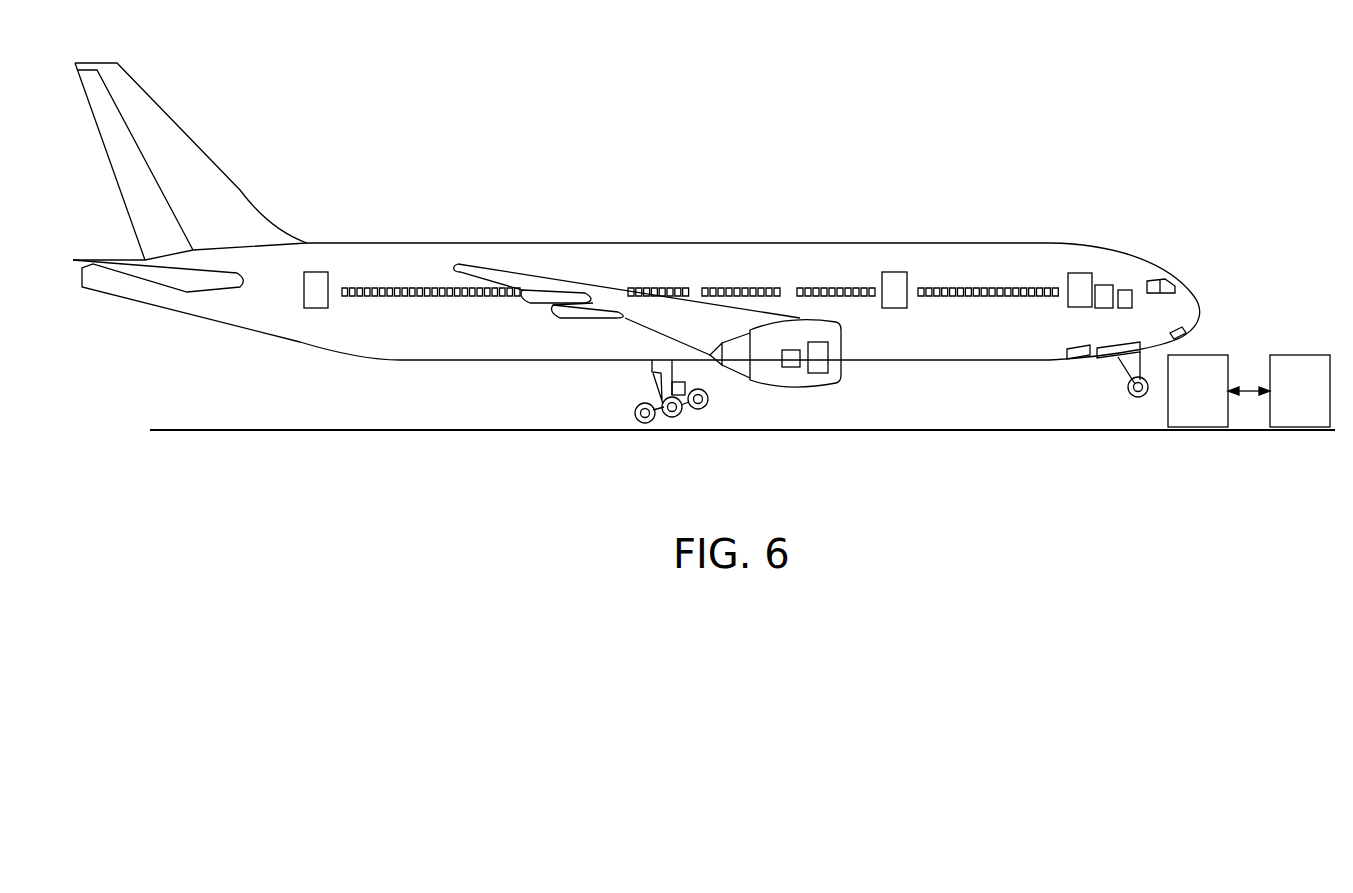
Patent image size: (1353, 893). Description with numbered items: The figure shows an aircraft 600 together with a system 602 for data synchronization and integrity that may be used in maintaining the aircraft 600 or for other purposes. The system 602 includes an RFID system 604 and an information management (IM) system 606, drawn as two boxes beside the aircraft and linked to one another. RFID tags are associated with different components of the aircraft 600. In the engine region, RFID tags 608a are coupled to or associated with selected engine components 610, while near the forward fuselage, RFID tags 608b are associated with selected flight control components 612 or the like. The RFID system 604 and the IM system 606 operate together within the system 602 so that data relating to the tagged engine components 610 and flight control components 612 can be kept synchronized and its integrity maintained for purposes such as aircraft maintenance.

The aircraft 600 is at (990, 243).
The system for data synchronization and integrity 602 is at (1278, 313).
The RFID system 604 is at (1218, 355).
The information management (IM) system 606 is at (1310, 355).
The RFID tags 608a is at (792, 368).
The RFID tags 608b is at (1125, 290).
The engine components 610 is at (820, 374).
The flight control components 612 is at (1103, 285).